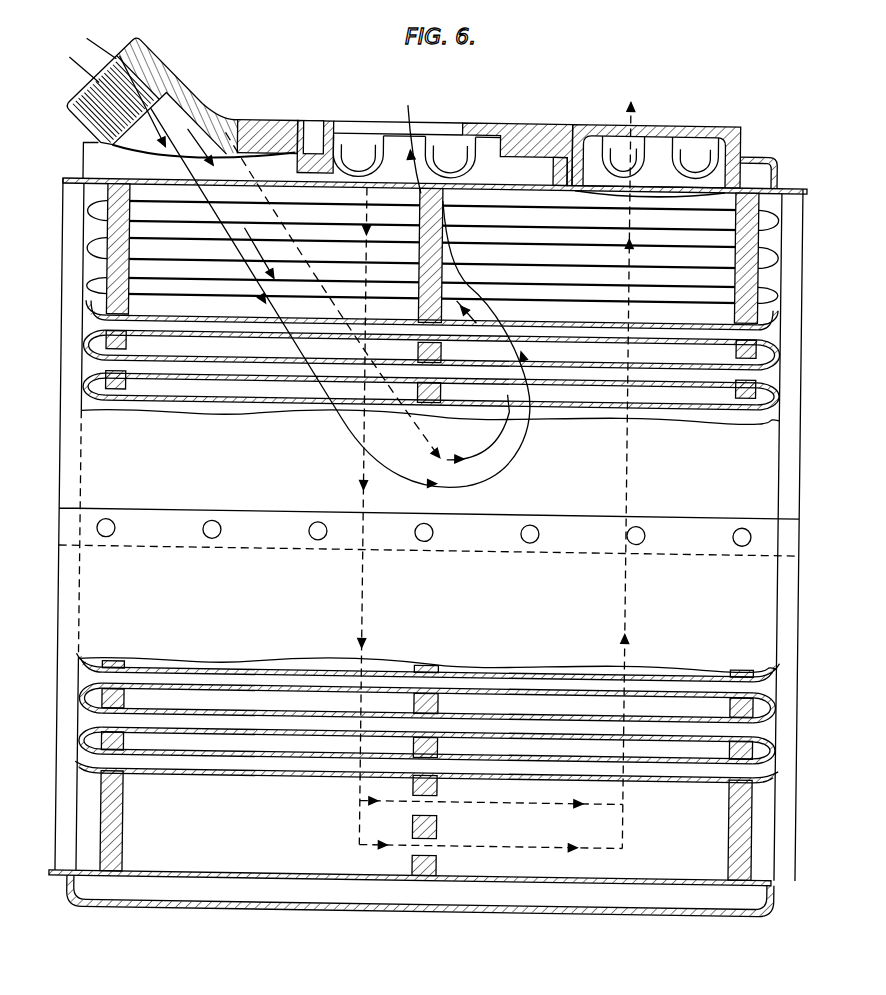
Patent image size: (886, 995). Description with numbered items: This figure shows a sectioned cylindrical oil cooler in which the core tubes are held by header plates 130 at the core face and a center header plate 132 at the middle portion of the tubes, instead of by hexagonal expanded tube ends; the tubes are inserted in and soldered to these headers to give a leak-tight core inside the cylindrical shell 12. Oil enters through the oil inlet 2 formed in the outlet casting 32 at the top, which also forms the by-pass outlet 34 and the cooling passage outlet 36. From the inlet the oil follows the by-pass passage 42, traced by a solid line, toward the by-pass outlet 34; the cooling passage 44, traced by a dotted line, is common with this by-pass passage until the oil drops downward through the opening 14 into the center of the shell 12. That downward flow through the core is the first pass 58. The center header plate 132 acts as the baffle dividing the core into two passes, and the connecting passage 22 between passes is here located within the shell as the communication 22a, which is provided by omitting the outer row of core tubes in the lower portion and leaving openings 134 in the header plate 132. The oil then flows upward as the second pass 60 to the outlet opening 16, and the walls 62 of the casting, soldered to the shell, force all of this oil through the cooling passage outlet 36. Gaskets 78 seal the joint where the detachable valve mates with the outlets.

The oil inlet 2 is at (120, 36).
The shell 12 is at (164, 177).
The opening 14 is at (309, 184).
The outlet opening 16 is at (651, 166).
The connecting passage 22 is at (323, 907).
The communication between first and second pass 22a is at (541, 806).
The outlet casting 32 is at (258, 128).
The by-pass outlet 34 is at (356, 130).
The cooling passage outlet 36 is at (618, 120).
The by-pass passage 42 is at (212, 211).
The cooling passage 44 is at (251, 229).
The first pass 58 is at (364, 606).
The second pass 60 is at (643, 603).
The walls of the outlet casting 62 is at (565, 162).
The gaskets 78 is at (467, 124).
The header plate 130 is at (118, 828).
The center header plate 132 is at (445, 860).
The openings in the header plate 134 is at (440, 809).